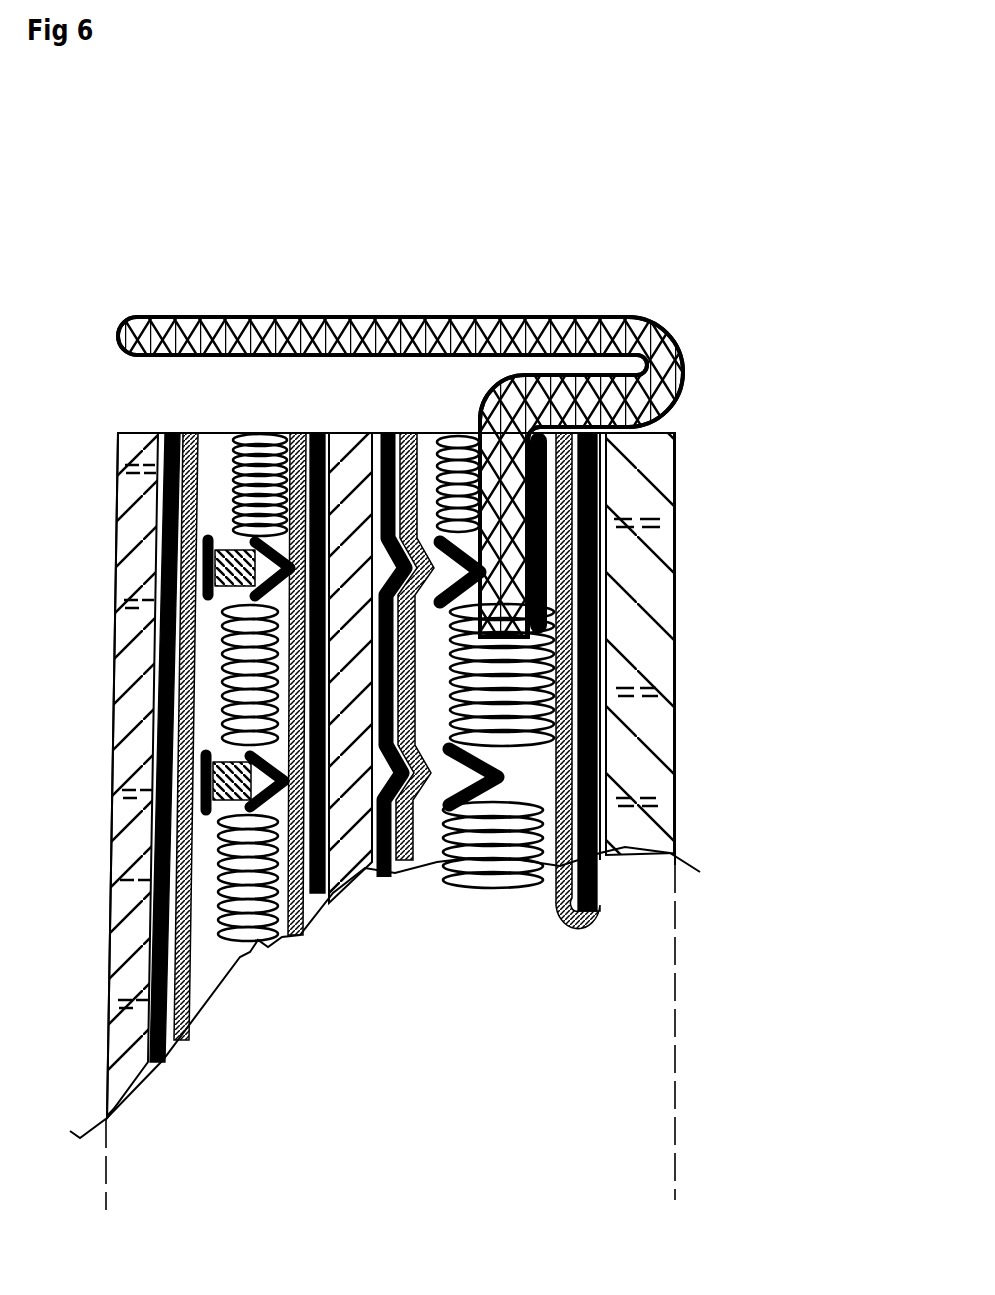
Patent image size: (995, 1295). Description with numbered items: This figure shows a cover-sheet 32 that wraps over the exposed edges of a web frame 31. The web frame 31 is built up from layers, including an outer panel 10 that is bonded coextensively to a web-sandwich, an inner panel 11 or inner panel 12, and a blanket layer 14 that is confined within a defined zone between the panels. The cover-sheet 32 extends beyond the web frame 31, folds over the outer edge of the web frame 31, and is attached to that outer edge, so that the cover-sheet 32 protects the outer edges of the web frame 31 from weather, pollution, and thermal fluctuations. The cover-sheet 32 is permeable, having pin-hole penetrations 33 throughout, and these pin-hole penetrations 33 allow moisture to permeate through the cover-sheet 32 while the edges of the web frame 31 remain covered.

The outer panel 10 is at (664, 762).
The inner panel 11 is at (364, 880).
The inner panel 12 is at (163, 1060).
The blanket layer 14 is at (540, 657).
The web frame 31 is at (106, 1175).
The cover-sheet 32 is at (488, 307).
The pin-hole penetrations 33 is at (165, 292).